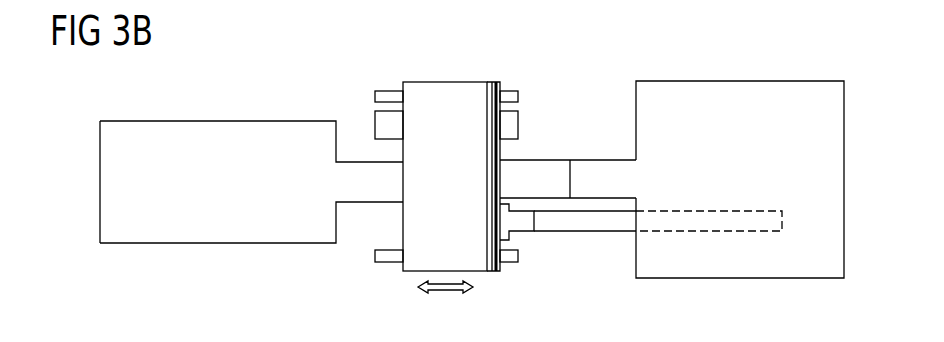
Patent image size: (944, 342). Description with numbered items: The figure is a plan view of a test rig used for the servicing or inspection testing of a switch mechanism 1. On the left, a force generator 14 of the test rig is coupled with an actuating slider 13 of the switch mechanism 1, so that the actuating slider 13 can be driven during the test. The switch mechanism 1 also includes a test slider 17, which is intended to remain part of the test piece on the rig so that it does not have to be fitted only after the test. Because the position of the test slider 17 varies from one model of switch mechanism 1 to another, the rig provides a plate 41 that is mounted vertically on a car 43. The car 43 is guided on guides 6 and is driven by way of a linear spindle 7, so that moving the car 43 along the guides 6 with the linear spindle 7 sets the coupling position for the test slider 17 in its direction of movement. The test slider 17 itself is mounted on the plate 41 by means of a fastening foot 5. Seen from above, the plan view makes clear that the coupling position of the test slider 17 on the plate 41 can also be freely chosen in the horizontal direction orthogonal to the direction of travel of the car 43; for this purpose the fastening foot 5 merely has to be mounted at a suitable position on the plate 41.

The switch mechanism 1 is at (737, 92).
The fastening foot 5 is at (527, 224).
The guides 6 is at (390, 95).
The linear spindle 7 is at (518, 125).
The actuating slider 13 is at (600, 168).
The force generator 14 is at (213, 130).
The test slider 17 is at (602, 222).
The plate 41 is at (487, 82).
The car 43 is at (443, 92).